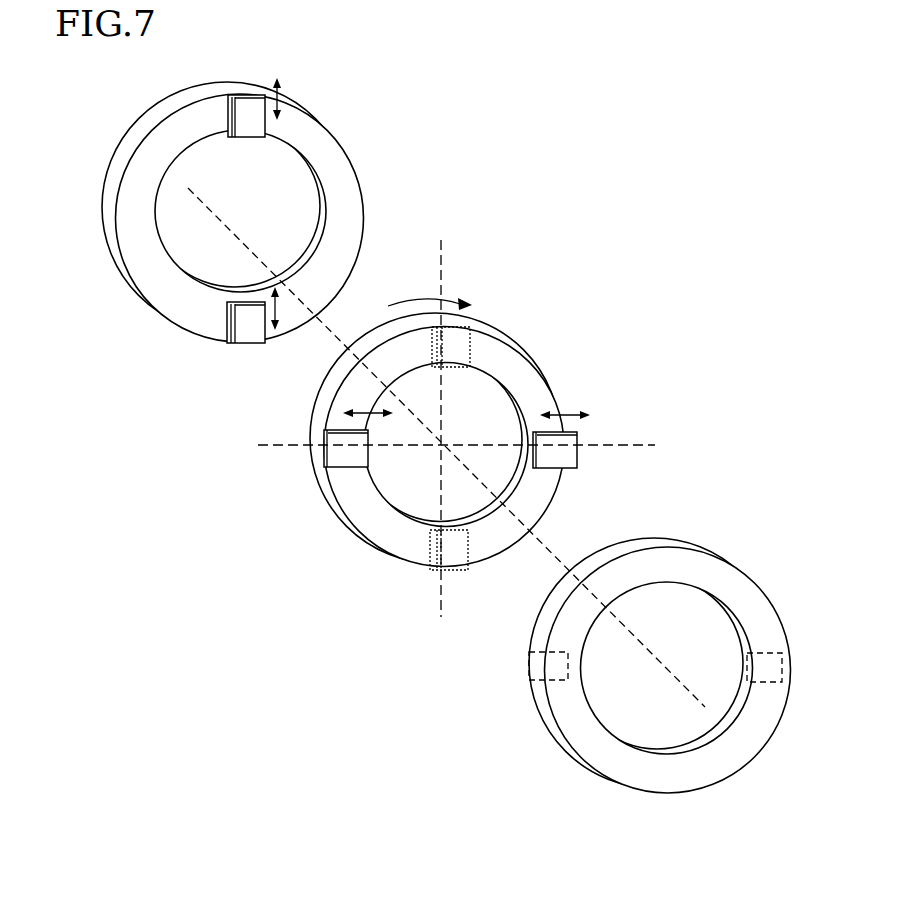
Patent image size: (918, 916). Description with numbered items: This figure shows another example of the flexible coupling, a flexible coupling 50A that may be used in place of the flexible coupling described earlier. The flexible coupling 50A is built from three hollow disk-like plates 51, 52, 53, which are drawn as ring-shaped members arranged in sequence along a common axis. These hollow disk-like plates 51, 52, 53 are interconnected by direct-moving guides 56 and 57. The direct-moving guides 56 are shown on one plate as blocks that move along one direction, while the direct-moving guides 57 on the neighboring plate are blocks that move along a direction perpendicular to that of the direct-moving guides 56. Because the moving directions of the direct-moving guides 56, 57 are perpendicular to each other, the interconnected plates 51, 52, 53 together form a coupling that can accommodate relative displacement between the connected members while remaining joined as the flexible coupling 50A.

The flexible coupling 50A is at (548, 305).
The hollow disk-like plate 51 is at (297, 138).
The hollow disk-like plate 52 is at (382, 521).
The hollow disk-like plate 53 is at (687, 560).
The direct-moving guide 56 is at (243, 113).
The direct-moving guide 57 is at (338, 438).